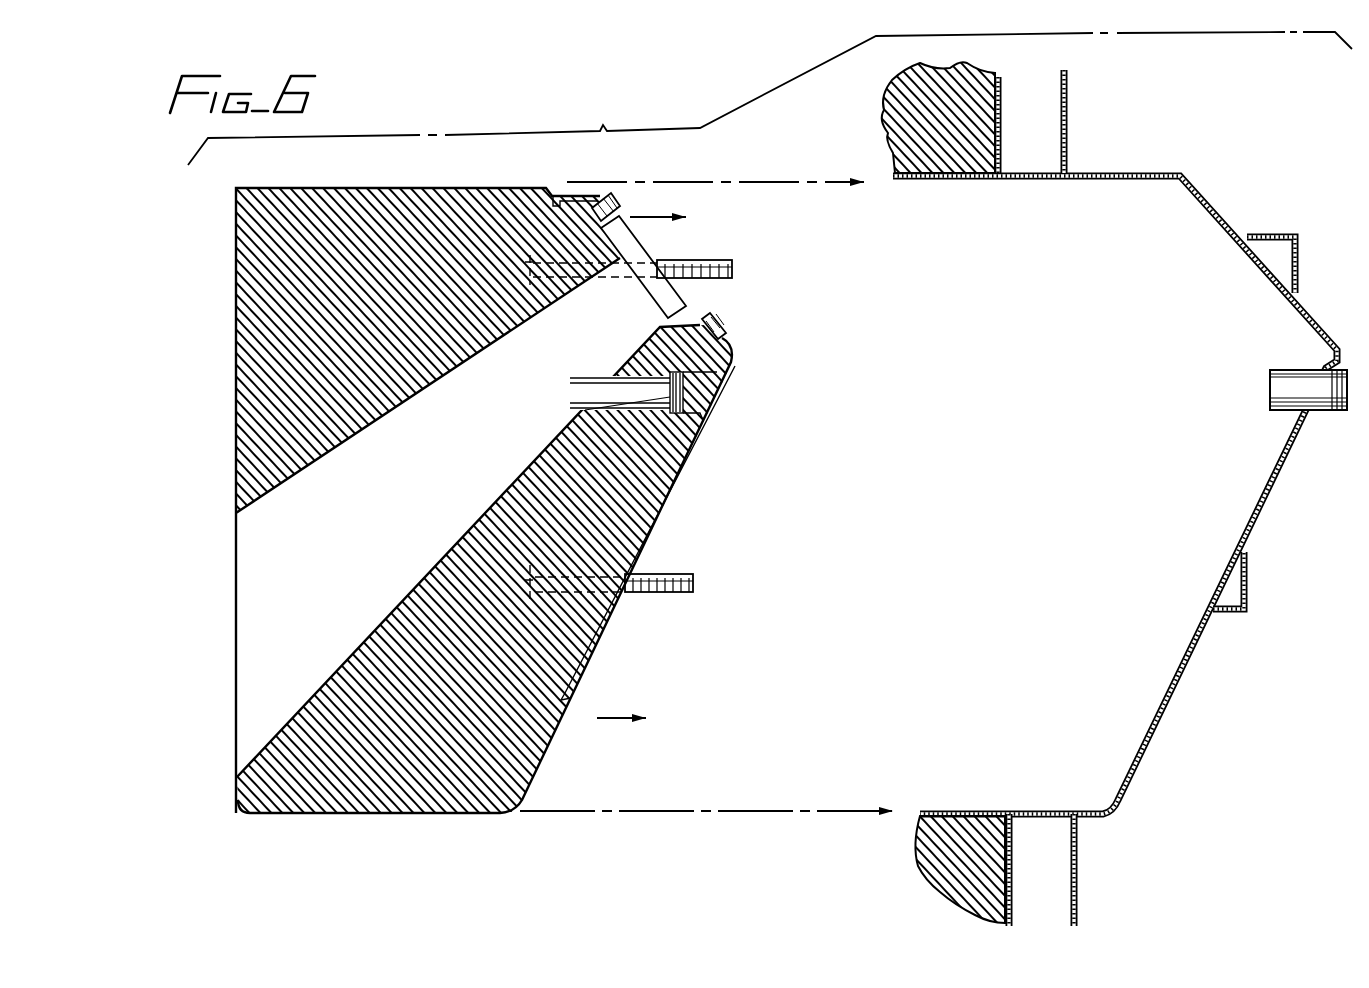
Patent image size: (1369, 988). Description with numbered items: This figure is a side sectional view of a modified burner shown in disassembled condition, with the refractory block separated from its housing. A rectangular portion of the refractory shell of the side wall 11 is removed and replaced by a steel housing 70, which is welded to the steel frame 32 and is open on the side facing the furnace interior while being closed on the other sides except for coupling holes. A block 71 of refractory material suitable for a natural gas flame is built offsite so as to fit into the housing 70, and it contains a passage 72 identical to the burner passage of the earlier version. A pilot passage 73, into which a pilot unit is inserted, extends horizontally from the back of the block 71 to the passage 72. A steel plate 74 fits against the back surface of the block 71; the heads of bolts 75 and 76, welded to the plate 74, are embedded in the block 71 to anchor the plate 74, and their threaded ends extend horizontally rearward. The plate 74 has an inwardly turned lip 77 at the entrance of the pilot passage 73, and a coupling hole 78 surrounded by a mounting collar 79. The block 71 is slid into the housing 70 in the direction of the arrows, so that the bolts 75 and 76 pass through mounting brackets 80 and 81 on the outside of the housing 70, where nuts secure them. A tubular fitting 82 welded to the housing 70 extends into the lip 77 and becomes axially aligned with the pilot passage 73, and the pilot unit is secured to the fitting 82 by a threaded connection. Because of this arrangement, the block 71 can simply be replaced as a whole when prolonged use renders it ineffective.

The side wall 11 is at (884, 122).
The steel frame 32 is at (1002, 112).
The steel housing 70 is at (1180, 172).
The block of refractory material 71 is at (320, 188).
The passage 72 is at (440, 502).
The pilot passage 73 is at (683, 382).
The steel plate 74 is at (690, 470).
The bolt 75 is at (640, 577).
The bolt 76 is at (665, 262).
The inwardly turned lip 77 is at (703, 408).
The coupling hole 78 is at (708, 316).
The mounting collar 79 is at (612, 216).
The mounting bracket 80 is at (1250, 606).
The mounting bracket 81 is at (1293, 236).
The tubular fitting 82 is at (1292, 370).